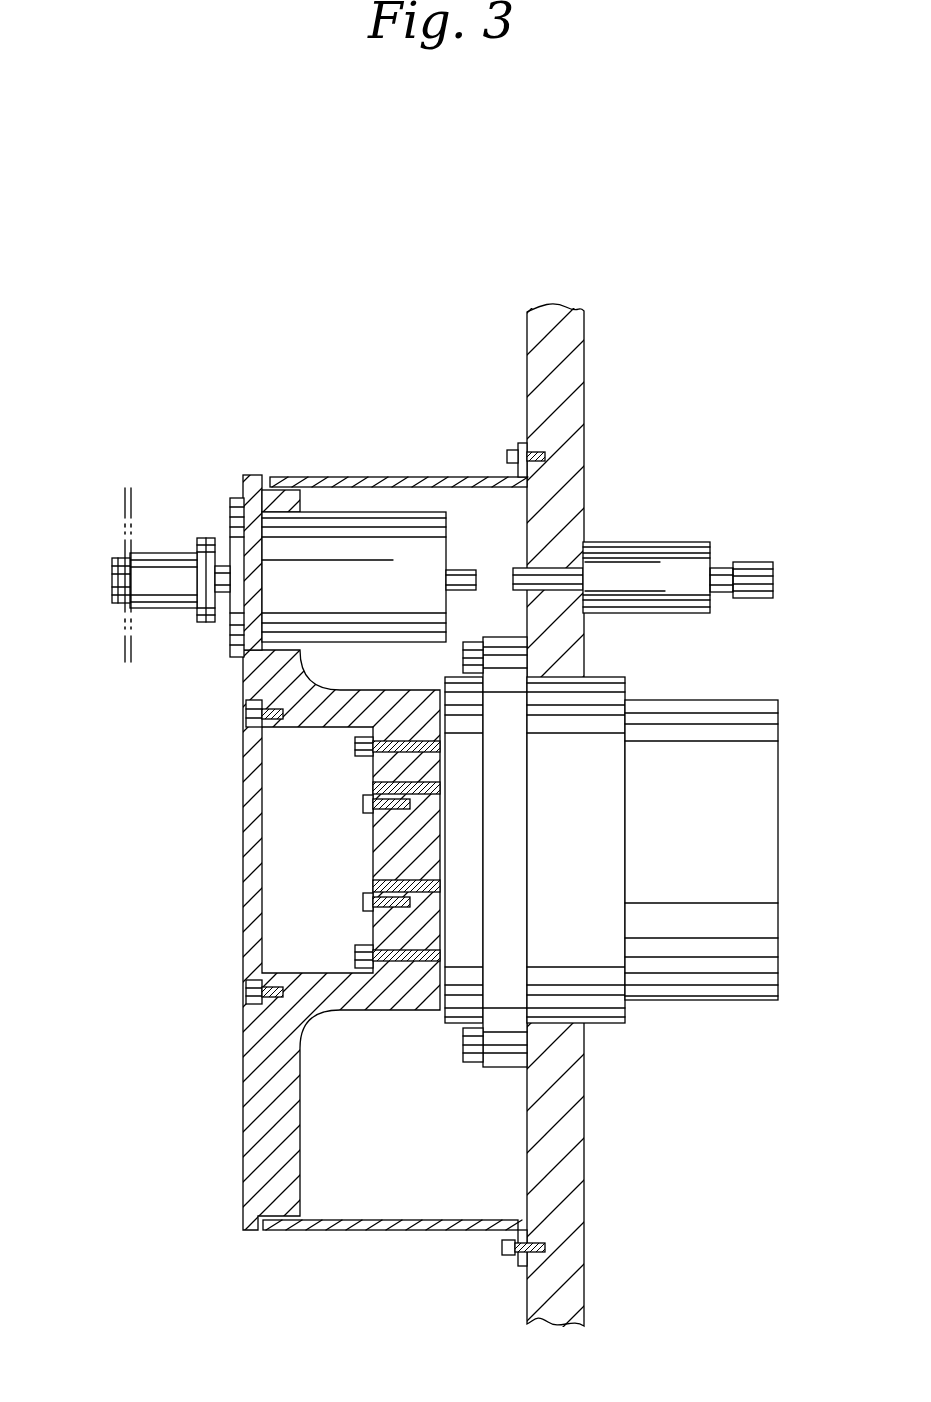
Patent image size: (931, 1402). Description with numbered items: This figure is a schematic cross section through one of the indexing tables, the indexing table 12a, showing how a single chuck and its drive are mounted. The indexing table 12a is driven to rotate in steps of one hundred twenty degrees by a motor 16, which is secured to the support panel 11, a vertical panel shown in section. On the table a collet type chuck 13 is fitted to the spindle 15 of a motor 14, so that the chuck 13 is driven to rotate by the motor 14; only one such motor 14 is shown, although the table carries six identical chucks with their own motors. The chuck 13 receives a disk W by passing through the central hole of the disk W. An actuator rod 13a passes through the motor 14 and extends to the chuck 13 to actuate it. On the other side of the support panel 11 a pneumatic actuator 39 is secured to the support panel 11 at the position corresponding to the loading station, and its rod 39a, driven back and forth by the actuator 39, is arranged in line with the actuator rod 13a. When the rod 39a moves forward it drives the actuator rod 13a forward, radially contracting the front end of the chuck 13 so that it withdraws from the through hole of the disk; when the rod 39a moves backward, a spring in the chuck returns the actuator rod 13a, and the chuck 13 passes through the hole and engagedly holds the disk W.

The support panel 11 is at (537, 1243).
The indexing table 12a is at (243, 1170).
The collet type chuck 13 is at (113, 585).
The actuator rod 13a is at (468, 568).
The motor 14 is at (356, 525).
The spindle 15 is at (212, 575).
The motor 16 is at (708, 968).
The pneumatic actuator 39 is at (680, 612).
The rod 39a is at (540, 570).
The disk W is at (122, 655).